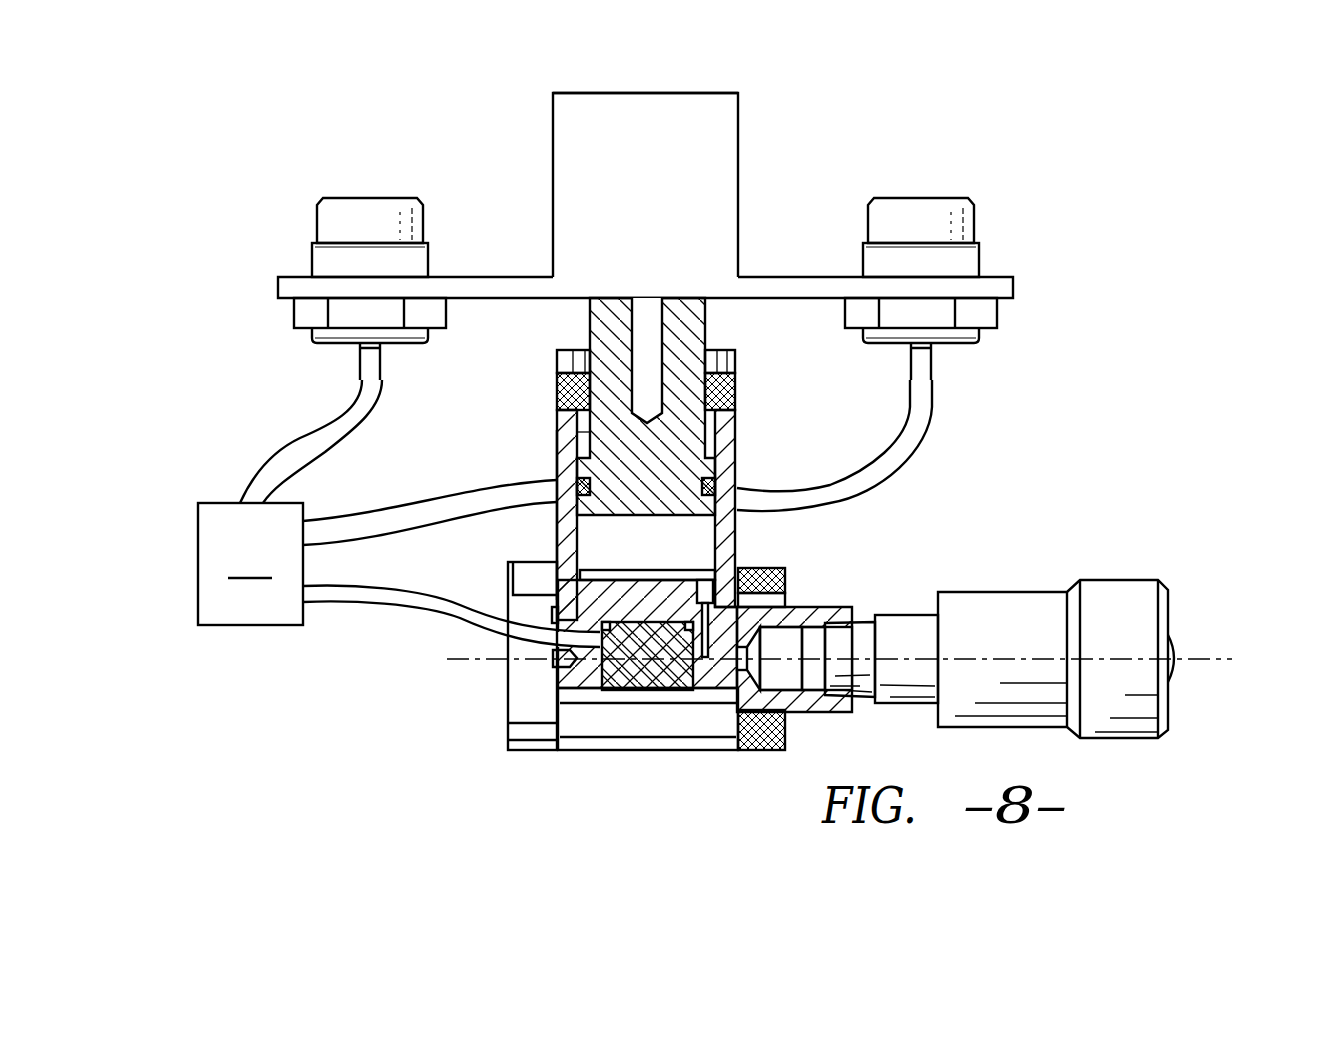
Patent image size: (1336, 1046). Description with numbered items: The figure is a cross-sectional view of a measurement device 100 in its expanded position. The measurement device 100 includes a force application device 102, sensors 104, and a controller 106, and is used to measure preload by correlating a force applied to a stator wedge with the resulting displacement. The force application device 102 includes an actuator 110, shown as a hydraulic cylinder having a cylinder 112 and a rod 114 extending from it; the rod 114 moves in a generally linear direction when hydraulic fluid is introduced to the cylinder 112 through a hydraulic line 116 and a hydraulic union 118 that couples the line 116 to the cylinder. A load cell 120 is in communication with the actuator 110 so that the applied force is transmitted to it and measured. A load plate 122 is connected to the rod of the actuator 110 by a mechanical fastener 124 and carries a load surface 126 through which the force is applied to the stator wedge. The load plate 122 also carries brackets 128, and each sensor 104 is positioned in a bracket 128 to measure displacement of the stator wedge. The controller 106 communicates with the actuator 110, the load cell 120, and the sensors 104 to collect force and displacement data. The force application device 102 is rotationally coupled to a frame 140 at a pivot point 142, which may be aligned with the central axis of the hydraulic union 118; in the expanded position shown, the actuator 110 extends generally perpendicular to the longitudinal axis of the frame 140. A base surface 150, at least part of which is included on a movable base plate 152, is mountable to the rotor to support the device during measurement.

The measurement device 100 is at (1078, 215).
The force application device 102 is at (834, 166).
The sensor 104 is at (362, 190).
The controller 106 is at (565, 502).
The actuator 110 is at (589, 545).
The cylinder 112 is at (557, 453).
The rod 114 is at (658, 406).
The hydraulic line 116 is at (1172, 648).
The hydraulic union 118 is at (1110, 590).
The load cell 120 is at (636, 672).
The load plate 122 is at (746, 188).
The mechanical fastener 124 is at (647, 338).
The load surface 126 is at (685, 93).
The bracket 128 is at (512, 277).
The frame 140 is at (507, 605).
The pivot point 142 is at (1207, 662).
The base surface 150 is at (668, 751).
The base plate 152 is at (667, 728).